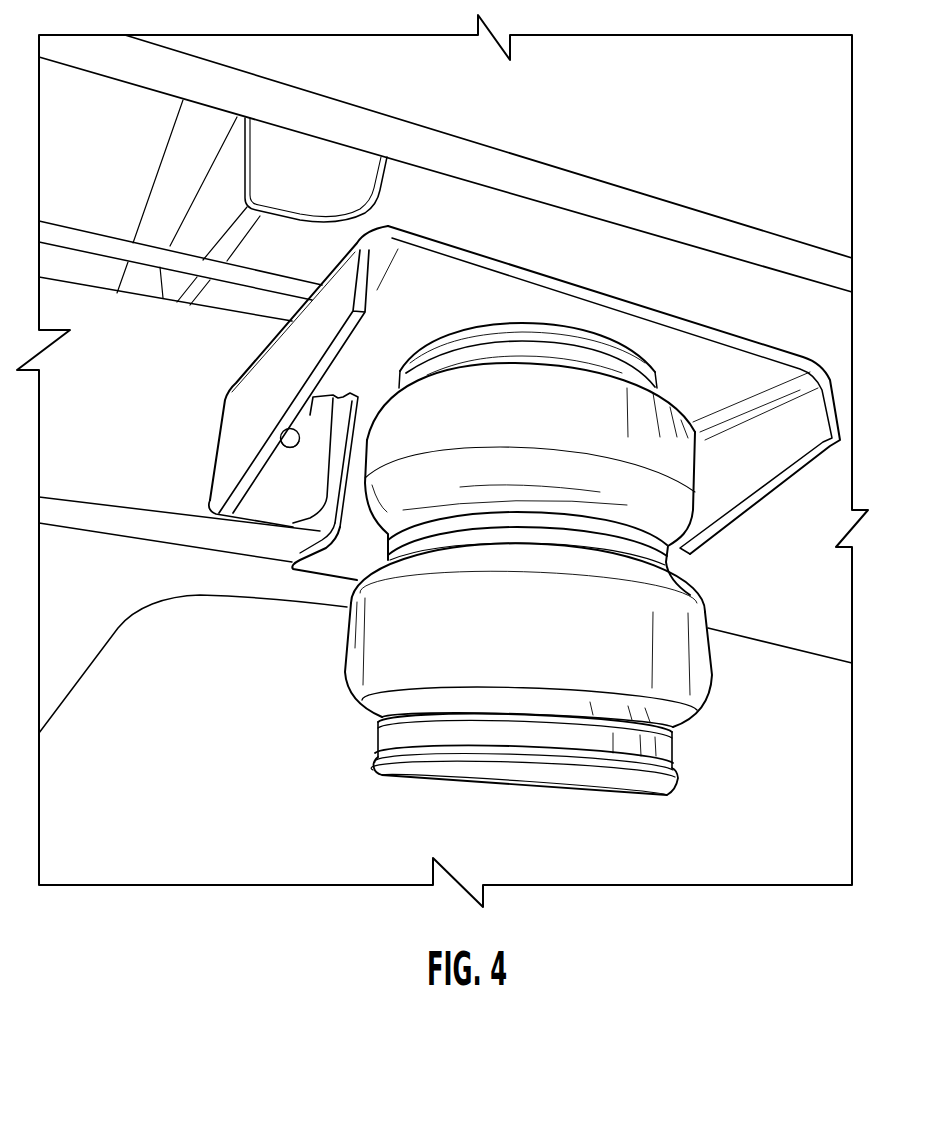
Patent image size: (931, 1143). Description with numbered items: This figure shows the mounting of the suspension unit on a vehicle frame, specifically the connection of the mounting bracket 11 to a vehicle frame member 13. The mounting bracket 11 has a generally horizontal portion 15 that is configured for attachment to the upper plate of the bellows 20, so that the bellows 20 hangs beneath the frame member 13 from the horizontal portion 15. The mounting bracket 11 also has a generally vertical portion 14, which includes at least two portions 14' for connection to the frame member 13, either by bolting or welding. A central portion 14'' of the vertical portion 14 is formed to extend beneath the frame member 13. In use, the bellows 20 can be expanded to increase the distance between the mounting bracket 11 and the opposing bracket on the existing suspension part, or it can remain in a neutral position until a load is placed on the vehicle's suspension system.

The mounting bracket 11 is at (224, 432).
The vehicle frame member 13 is at (167, 362).
The generally vertical portion 14 is at (786, 478).
The portions for connection to the frame 14' is at (319, 460).
The central portion 14'' is at (283, 584).
The generally horizontal portion 15 is at (418, 318).
The bellows 20 is at (329, 670).